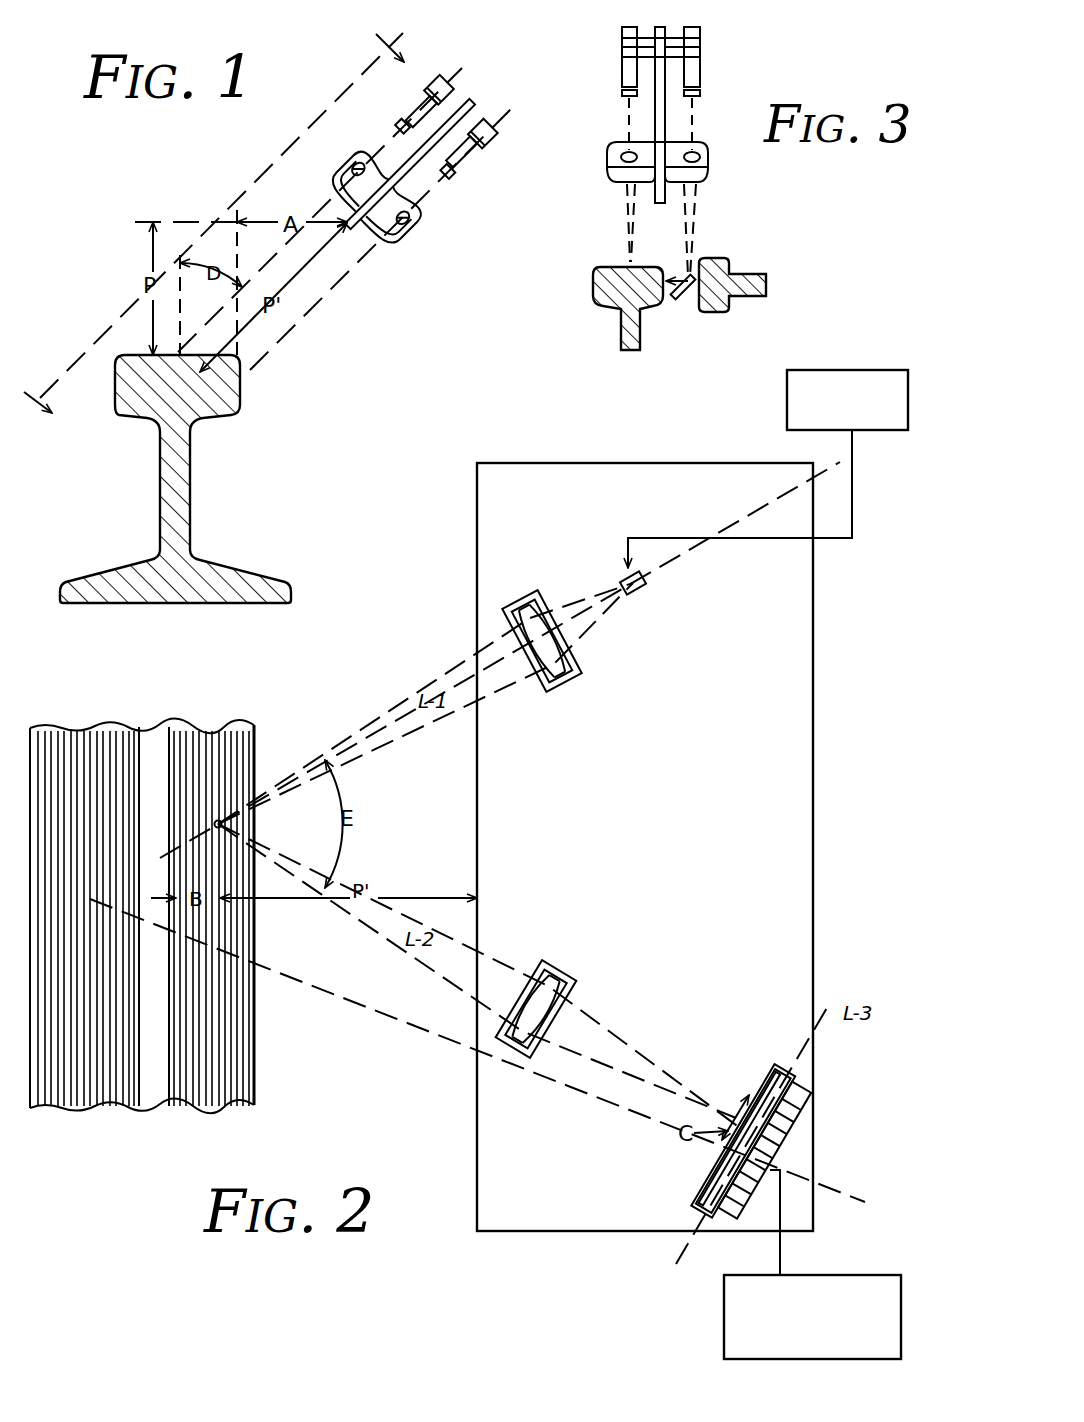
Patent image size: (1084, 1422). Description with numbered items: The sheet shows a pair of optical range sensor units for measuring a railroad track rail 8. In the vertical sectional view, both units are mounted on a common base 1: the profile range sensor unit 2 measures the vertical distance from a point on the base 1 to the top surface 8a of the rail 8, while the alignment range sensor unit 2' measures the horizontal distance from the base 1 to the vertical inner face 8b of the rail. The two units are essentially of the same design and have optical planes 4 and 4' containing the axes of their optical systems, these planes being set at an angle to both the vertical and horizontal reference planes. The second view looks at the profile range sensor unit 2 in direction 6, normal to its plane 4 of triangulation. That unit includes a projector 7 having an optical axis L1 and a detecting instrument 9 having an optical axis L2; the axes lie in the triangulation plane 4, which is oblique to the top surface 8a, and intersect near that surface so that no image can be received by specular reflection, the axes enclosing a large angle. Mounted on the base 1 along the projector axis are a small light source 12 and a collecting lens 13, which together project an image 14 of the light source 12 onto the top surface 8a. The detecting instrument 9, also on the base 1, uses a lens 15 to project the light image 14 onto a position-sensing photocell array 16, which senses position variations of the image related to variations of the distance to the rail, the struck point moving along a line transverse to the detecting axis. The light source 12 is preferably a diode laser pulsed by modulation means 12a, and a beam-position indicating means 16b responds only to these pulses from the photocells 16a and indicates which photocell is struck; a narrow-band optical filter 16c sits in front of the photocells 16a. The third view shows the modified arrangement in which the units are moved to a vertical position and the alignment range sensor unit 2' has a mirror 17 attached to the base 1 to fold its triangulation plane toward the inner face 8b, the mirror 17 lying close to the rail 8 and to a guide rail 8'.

In FIG. 1, the common base 1 is at (406, 148).
In FIG. 3, the common base 1 is at (600, 108).
In FIG. 2, the common base 1 is at (576, 463).
In FIG. 1, the profile range sensor unit 2 is at (224, 242).
In FIG. 3, the profile range sensor unit 2 is at (628, 164).
In FIG. 2, the profile range sensor unit 2 is at (431, 554).
In FIG. 1, the alignment range sensor unit 2' is at (393, 247).
In FIG. 3, the alignment range sensor unit 2' is at (724, 167).
In FIG. 1, the optical plane 4 is at (334, 190).
In FIG. 1, the optical plane 4' is at (394, 223).
In FIG. 1, the viewing direction 6 is at (333, 86).
In FIG. 2, the projector 7 is at (587, 556).
In FIG. 1, the rail 8 is at (182, 479).
In FIG. 3, the rail 8 is at (598, 308).
In FIG. 2, the rail 8 is at (160, 915).
In FIG. 1, the top surface 8a is at (141, 353).
In FIG. 3, the top surface 8a is at (616, 265).
In FIG. 2, the top surface 8a is at (231, 722).
In FIG. 1, the vertical inner face 8b is at (241, 378).
In FIG. 3, the vertical inner face 8b is at (667, 274).
In FIG. 3, the guide rail 8' is at (733, 268).
In FIG. 2, the detecting instrument 9 is at (609, 1110).
In FIG. 2, the light source 12 is at (642, 596).
In FIG. 2, the modulation means 12a is at (878, 368).
In FIG. 2, the lens 13 is at (509, 612).
In FIG. 2, the image 14 is at (218, 818).
In FIG. 2, the lens 15 is at (546, 968).
In FIG. 2, the position-sensing photocell array 16 is at (783, 1070).
In FIG. 2, the photocells 16a is at (821, 1126).
In FIG. 2, the beam-position indicating means 16b is at (814, 1275).
In FIG. 2, the narrow-band optical filter 16c is at (779, 1088).
In FIG. 3, the mirror 17 is at (689, 300).